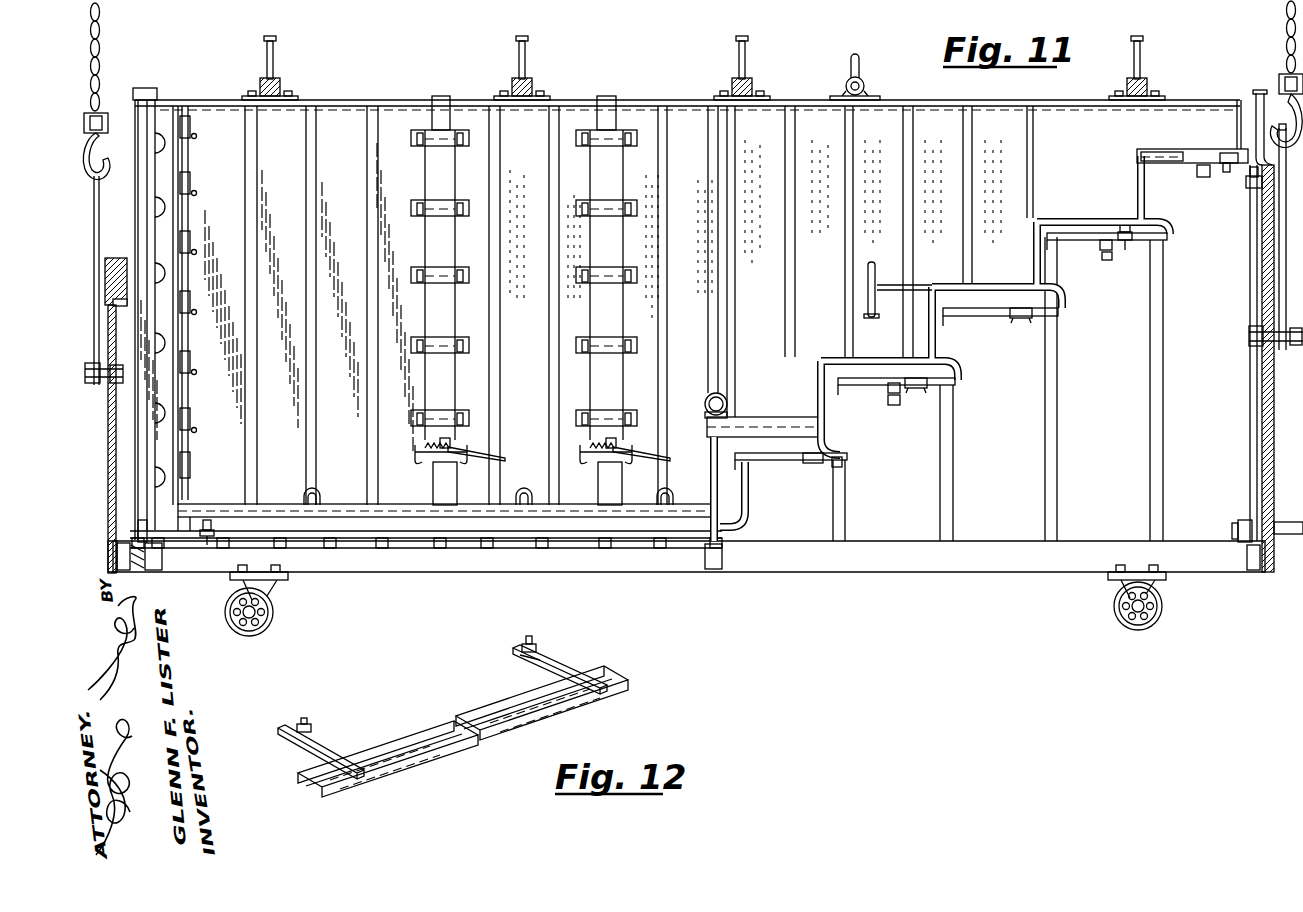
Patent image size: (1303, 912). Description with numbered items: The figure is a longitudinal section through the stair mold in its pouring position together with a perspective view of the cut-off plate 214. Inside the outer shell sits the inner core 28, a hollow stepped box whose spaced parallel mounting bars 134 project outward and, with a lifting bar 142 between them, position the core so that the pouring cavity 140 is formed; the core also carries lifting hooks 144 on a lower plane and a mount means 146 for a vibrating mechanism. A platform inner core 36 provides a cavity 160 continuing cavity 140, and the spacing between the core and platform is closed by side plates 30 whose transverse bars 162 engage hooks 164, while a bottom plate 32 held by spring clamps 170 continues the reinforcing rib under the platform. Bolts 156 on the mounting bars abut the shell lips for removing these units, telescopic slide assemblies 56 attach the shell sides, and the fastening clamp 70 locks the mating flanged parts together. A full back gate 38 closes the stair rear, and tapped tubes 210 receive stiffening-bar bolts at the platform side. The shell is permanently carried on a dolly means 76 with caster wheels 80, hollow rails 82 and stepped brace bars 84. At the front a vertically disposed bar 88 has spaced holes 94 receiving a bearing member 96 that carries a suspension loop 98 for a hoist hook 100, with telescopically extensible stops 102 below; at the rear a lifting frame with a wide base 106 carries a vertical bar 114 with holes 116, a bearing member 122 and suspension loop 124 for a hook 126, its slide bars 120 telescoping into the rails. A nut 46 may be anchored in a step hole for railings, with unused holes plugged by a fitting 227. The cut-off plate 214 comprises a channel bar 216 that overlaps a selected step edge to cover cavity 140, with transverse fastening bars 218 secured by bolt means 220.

In FIG. 11, the inner core 28 is at (347, 122).
In FIG. 11, the side plates 30 is at (445, 176).
In FIG. 11, the bottom plate 32 is at (452, 466).
In FIG. 11, the platform inner core 36 is at (575, 118).
In FIG. 11, the full back gate 38 is at (156, 112).
In FIG. 11, the nut 46 is at (212, 532).
In FIG. 11, the telescopic slide assemblies 56 is at (893, 407).
In FIG. 11, the fastening clamp 70 is at (196, 126).
In FIG. 11, the dolly means 76 is at (876, 575).
In FIG. 11, the caster wheels 80 is at (273, 623).
In FIG. 11, the side rails 82 is at (978, 571).
In FIG. 11, the stepped brace bars 84 is at (847, 510).
In FIG. 11, the vertically disposed bar 88 is at (1256, 284).
In FIG. 11, the holes 94 is at (1258, 372).
In FIG. 11, the bearing member 96 is at (1292, 350).
In FIG. 11, the suspension loop 98 is at (1278, 238).
In FIG. 11, the hook 100 is at (1254, 188).
In FIG. 11, the telescopically extensible stops 102 is at (1240, 520).
In FIG. 11, the base 106 is at (116, 547).
In FIG. 11, the vertical bar 114 is at (108, 438).
In FIG. 11, the holes 116 is at (108, 472).
In FIG. 11, the slide bars 120 is at (135, 572).
In FIG. 11, the bearing member 122 is at (88, 386).
In FIG. 11, the suspension loop 124 is at (101, 222).
In FIG. 11, the hook 126 is at (112, 120).
In FIG. 11, the mounting bars 134 is at (282, 82).
In FIG. 11, the pouring cavity 140 is at (780, 461).
In FIG. 11, the lifting bar 142 is at (864, 84).
In FIG. 11, the lifting hooks 144 is at (524, 487).
In FIG. 11, the mount means 146 is at (712, 393).
In FIG. 11, the bolts 156 is at (277, 49).
In FIG. 11, the cavity 160 is at (312, 518).
In FIG. 11, the transverse bars 162 is at (442, 336).
In FIG. 11, the hooks 164 is at (586, 208).
In FIG. 11, the spring clamps 170 is at (503, 455).
In FIG. 11, the tapped tubes 210 is at (166, 550).
In FIG. 11, the cut-off plate 214 is at (1166, 150).
In FIG. 12, the cut-off plate 214 is at (418, 716).
In FIG. 12, the channel bar 216 is at (490, 718).
In FIG. 11, the fastening bars 218 is at (1240, 118).
In FIG. 12, the fastening bars 218 is at (316, 762).
In FIG. 11, the bolt means 220 is at (1228, 152).
In FIG. 12, the bolt means 220 is at (307, 720).
In FIG. 11, the fitting 227 is at (918, 395).